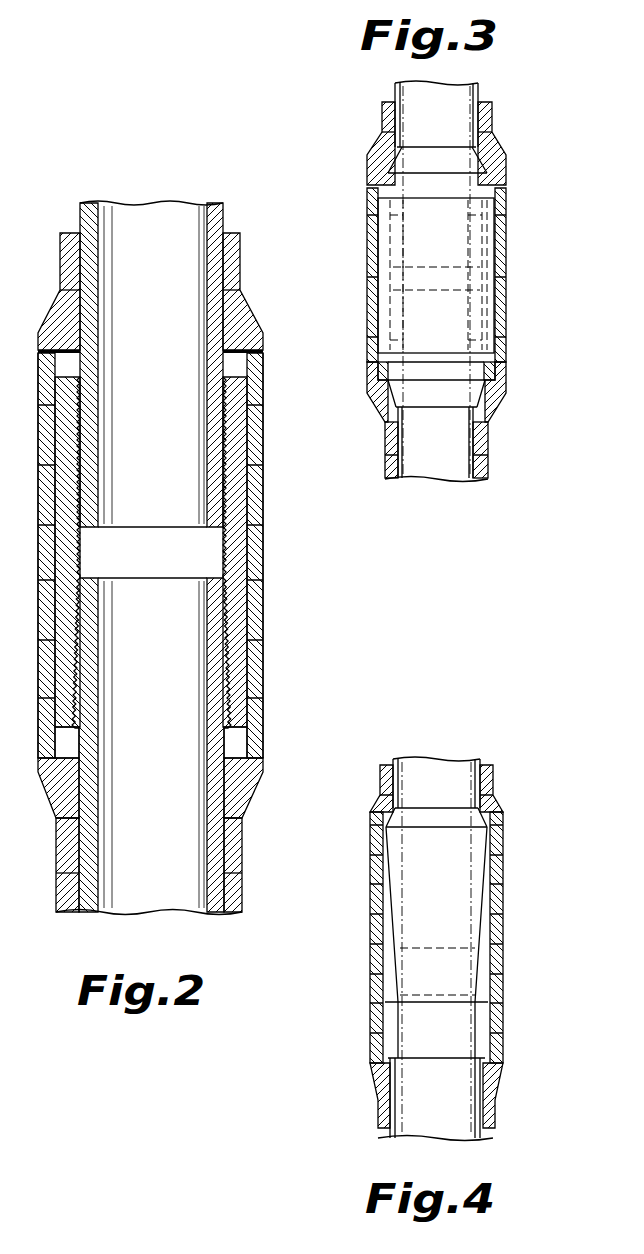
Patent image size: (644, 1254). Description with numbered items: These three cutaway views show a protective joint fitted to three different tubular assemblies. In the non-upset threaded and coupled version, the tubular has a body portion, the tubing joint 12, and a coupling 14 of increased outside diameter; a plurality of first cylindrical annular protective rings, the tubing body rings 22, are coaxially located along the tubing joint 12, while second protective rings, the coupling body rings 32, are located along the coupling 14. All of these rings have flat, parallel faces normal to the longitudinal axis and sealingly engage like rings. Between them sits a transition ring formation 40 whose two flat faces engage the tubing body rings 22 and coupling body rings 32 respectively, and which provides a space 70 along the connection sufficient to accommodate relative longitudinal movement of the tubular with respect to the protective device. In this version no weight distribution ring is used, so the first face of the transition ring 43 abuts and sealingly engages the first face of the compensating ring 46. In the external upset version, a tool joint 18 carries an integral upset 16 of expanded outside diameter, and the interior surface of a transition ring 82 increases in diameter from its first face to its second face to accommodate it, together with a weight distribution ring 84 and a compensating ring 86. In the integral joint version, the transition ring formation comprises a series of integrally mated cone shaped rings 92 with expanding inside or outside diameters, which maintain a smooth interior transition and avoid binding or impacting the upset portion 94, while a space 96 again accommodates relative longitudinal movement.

In FIG. 2, the tubing joint 12 is at (87, 201).
In FIG. 4, the tubing joint 12 is at (481, 760).
In FIG. 2, the coupling 14 is at (232, 527).
In FIG. 3, the coupling 14 is at (390, 250).
In FIG. 4, the coupling 14 is at (481, 942).
In FIG. 3, the integral upset 16 is at (373, 178).
In FIG. 3, the tool joint 18 is at (478, 84).
In FIG. 2, the tubing body rings 22 is at (236, 247).
In FIG. 2, the coupling body rings 32 is at (257, 447).
In FIG. 2, the transition ring formation 40 is at (26, 824).
In FIG. 4, the transition ring formation 40 is at (348, 1041).
In FIG. 2, the transition ring 43 is at (246, 806).
In FIG. 2, the compensating ring 46 is at (264, 757).
In FIG. 2, the space 70 is at (264, 729).
In FIG. 3, the transition ring 82 is at (386, 420).
In FIG. 3, the weight distribution ring 84 is at (367, 386).
In FIG. 3, the compensating ring 86 is at (379, 361).
In FIG. 4, the cone shaped rings 92 is at (371, 1060).
In FIG. 4, the upset portion 94 is at (466, 1031).
In FIG. 4, the space 96 is at (503, 1002).